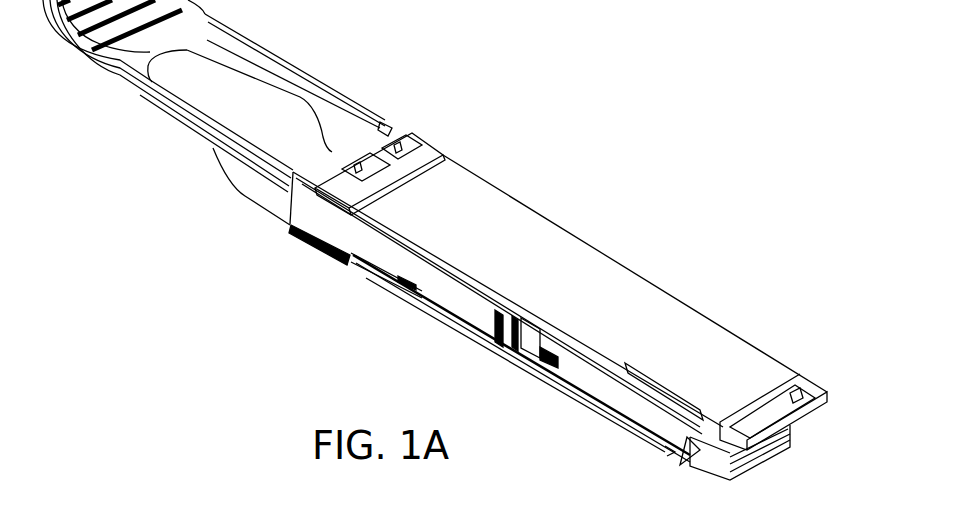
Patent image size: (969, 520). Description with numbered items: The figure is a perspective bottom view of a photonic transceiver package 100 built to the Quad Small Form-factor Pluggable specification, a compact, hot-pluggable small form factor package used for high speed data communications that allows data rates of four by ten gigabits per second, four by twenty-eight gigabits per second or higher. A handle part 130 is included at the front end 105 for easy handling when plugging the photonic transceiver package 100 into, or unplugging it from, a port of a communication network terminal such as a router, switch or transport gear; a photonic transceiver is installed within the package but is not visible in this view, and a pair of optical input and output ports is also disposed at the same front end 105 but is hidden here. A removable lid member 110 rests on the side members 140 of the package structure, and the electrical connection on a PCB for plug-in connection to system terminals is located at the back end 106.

The photonic transceiver package 100 is at (638, 132).
The front end 105 is at (328, 175).
The back end 106 is at (777, 435).
The lid member 110 is at (575, 260).
The handle part 130 is at (158, 105).
The side members 140 is at (402, 259).